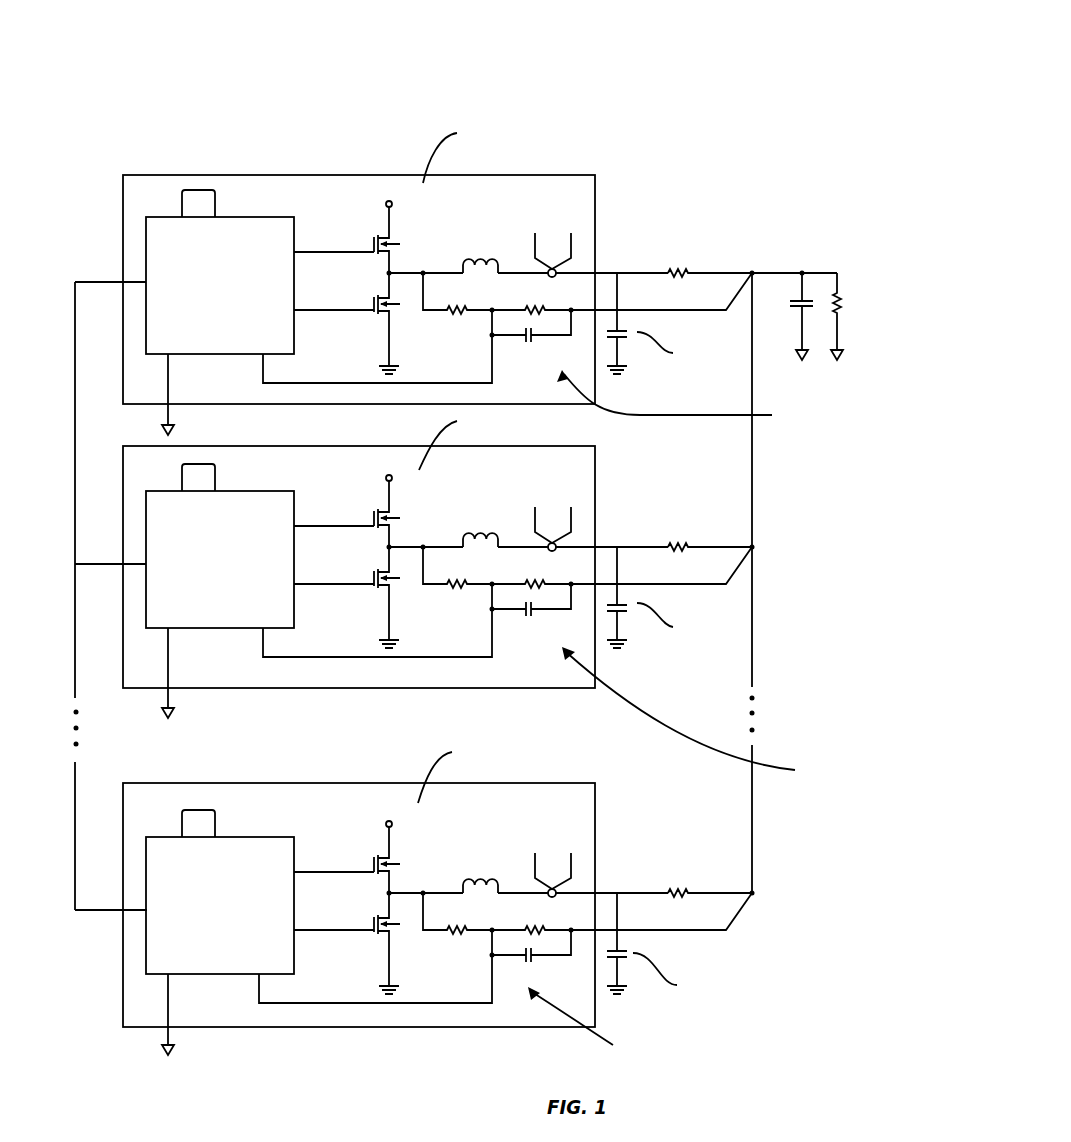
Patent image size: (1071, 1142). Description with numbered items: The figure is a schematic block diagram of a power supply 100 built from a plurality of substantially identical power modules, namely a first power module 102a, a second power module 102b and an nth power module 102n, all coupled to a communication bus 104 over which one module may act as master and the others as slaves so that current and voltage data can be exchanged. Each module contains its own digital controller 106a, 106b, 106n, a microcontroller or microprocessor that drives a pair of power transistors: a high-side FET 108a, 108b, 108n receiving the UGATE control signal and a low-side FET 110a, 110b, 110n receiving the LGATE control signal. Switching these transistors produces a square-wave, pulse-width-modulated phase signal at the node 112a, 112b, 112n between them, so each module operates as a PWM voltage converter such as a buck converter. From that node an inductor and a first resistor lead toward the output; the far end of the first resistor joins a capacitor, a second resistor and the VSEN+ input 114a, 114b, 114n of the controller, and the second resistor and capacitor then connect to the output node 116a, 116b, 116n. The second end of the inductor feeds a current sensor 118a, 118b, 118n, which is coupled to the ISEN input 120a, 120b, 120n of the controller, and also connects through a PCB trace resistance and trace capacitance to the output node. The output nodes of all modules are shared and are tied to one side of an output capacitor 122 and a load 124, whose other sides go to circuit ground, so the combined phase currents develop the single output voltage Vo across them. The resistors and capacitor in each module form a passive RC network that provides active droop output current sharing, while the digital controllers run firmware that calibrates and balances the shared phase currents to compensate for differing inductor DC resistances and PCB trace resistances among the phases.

The power supply 100 is at (716, 108).
The first power module 102a is at (552, 173).
The second power module 102b is at (485, 605).
The nth power module 102n is at (484, 905).
The communication bus 104 is at (110, 282).
The digital controller 106a is at (245, 217).
The digital controller 106b is at (220, 519).
The digital controller 106n is at (220, 866).
The power transistor 108a is at (373, 247).
The power transistor 108b is at (345, 503).
The power transistor 108n is at (345, 850).
The power transistor 110a is at (378, 313).
The power transistor 110b is at (354, 597).
The power transistor 110n is at (358, 943).
The node 112a is at (389, 273).
The node 112b is at (427, 515).
The node 112n is at (427, 861).
The input (VSEN+) 114a is at (263, 354).
The input (VSEN+) 114b is at (341, 632).
The input (VSEN+) 114n is at (340, 979).
The output node 116a is at (752, 273).
The output node 116b is at (756, 523).
The output node 116n is at (756, 870).
The current sensor (ISEN) 118a is at (594, 213).
The current sensor (ISEN) 118b is at (607, 499).
The current sensor (ISEN) 118n is at (607, 846).
The second input (ISEN) 120a is at (197, 188).
The second input (ISEN) 120b is at (205, 451).
The second input (ISEN) 120n is at (205, 798).
The output capacitor 122 is at (808, 290).
The load 124 is at (838, 288).